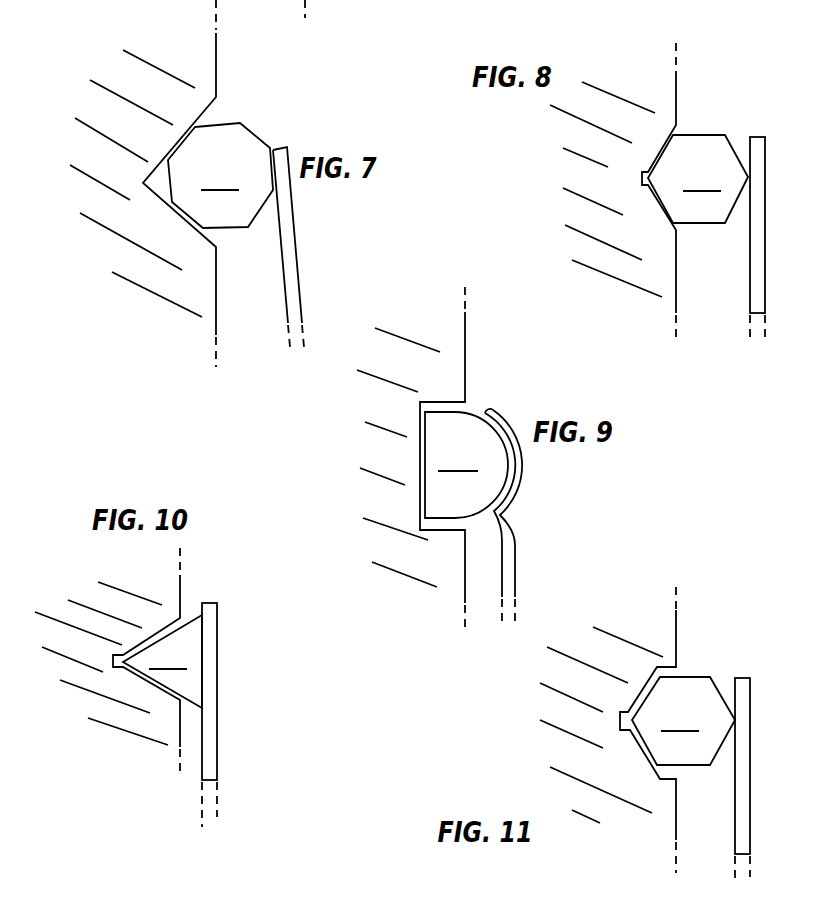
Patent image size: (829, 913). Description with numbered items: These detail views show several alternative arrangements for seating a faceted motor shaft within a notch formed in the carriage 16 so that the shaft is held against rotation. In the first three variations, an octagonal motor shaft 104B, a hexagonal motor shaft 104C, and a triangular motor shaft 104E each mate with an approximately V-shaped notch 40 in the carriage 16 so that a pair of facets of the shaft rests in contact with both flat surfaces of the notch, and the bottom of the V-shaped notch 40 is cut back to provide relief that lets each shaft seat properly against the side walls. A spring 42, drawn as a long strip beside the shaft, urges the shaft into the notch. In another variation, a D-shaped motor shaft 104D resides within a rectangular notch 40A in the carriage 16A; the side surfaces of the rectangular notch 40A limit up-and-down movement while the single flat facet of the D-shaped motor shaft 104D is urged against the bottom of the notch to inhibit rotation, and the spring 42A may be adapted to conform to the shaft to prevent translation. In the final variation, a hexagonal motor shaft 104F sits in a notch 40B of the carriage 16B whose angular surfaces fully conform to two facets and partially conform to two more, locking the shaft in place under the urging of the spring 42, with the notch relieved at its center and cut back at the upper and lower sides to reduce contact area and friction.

In FIG. 7, the carriage 16 is at (200, 48).
In FIG. 8, the carriage 16 is at (662, 78).
In FIG. 10, the carriage 16 is at (155, 582).
In FIG. 9, the carriage 16A is at (453, 337).
In FIG. 11, the carriage 16B is at (662, 627).
In FIG. 7, the V-shaped notch 40 is at (155, 197).
In FIG. 8, the V-shaped notch 40 is at (642, 183).
In FIG. 10, the V-shaped notch 40 is at (127, 677).
In FIG. 9, the rectangular notch 40A is at (420, 495).
In FIG. 11, the notch 40B is at (643, 748).
In FIG. 7, the spring 42 is at (288, 225).
In FIG. 8, the spring 42 is at (750, 270).
In FIG. 10, the spring 42 is at (217, 760).
In FIG. 11, the spring 42 is at (752, 700).
In FIG. 9, the spring 42A is at (512, 570).
In FIG. 7, the octagonal motor shaft 104B is at (220, 175).
In FIG. 8, the hexagonal motor shaft 104C is at (698, 179).
In FIG. 9, the D-shaped motor shaft 104D is at (466, 465).
In FIG. 10, the triangular motor shaft 104E is at (162, 661).
In FIG. 11, the hexagonal motor shaft 104F is at (683, 721).